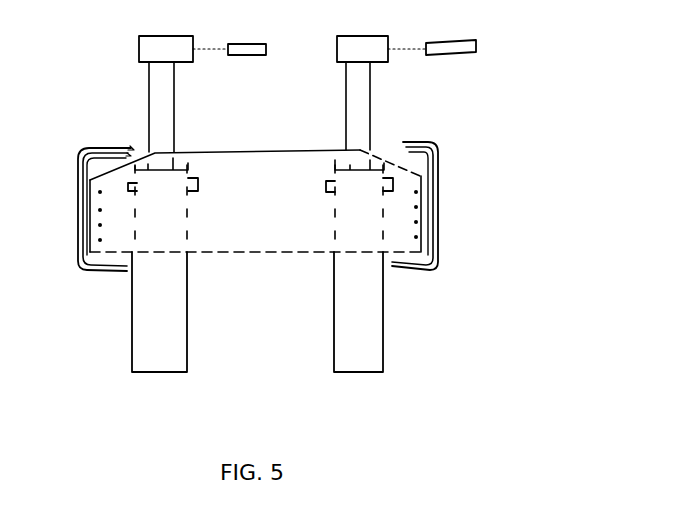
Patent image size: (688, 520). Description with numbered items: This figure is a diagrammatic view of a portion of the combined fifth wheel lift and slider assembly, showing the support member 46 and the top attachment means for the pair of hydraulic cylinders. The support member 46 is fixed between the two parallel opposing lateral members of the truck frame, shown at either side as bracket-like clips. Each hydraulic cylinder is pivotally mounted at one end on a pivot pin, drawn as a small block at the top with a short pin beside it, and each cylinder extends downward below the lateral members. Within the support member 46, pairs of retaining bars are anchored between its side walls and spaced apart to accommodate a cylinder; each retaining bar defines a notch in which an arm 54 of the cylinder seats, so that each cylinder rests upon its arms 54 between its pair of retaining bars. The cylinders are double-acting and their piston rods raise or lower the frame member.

The support member 46 is at (255, 201).
The arm 54 is at (200, 188).